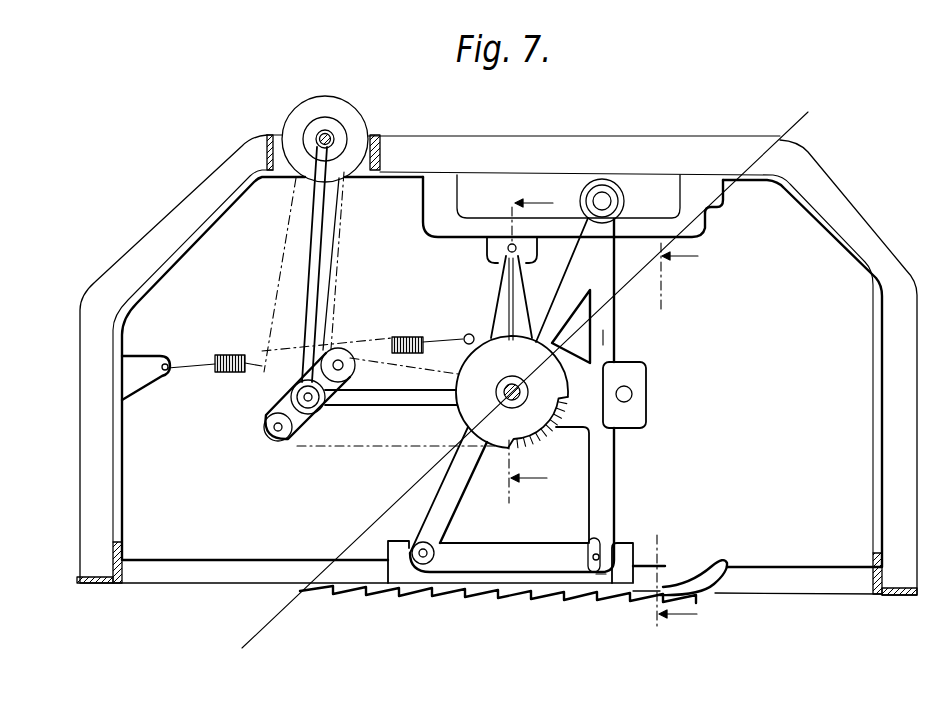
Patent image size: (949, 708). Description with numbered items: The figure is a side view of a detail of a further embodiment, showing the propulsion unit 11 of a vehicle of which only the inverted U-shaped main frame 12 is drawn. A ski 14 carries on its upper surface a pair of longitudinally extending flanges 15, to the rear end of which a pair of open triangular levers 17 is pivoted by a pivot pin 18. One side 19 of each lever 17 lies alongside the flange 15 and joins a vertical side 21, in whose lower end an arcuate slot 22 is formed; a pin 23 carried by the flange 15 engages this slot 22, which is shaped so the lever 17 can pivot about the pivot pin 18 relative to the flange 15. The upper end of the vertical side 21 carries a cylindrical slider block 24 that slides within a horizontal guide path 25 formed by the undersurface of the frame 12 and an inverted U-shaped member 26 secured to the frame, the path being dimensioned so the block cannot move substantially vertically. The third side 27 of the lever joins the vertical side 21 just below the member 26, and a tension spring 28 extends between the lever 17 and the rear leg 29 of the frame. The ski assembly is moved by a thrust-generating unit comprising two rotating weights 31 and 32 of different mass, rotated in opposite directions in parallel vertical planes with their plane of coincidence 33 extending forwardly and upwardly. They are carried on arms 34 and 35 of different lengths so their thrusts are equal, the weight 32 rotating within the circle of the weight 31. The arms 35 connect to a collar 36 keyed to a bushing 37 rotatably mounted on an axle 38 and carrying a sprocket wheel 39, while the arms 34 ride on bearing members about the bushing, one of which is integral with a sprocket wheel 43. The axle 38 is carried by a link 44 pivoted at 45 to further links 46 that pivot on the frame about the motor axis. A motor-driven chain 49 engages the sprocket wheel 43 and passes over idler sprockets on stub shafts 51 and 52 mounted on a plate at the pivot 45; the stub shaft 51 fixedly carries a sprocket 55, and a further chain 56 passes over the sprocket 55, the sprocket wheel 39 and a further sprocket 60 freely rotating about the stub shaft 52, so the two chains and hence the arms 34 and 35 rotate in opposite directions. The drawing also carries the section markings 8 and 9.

The section line 8 is at (688, 438).
The section line 9 is at (523, 348).
The propulsion unit 11 is at (672, 132).
The main frame 12 is at (849, 206).
The ski 14 is at (668, 590).
The longitudinally extending flanges 15 is at (627, 548).
The levers 17 is at (636, 450).
The pivot pin 18 is at (424, 565).
The side of lever 19 is at (490, 564).
The vertical side 21 is at (603, 488).
The arcuate slot 22 is at (600, 586).
The pin 23 is at (588, 549).
The cylindrical slider block 24 is at (605, 180).
The horizontal guide path 25 is at (558, 214).
The inverted U-shaped member 26 is at (453, 226).
The third side 27 is at (458, 477).
The tension spring 28 is at (385, 335).
The rear leg 29 is at (110, 442).
The rotating weight 31 is at (488, 250).
The rotating weight 32 is at (645, 369).
The plane of coincidence 33 is at (714, 206).
The arms 34 is at (500, 298).
The arms 35 is at (580, 388).
The collar 36 is at (352, 121).
The bushing 37 is at (290, 124).
The axle 38 is at (509, 386).
The sprocket wheel 39 is at (470, 404).
The sprocket wheel 43 is at (540, 428).
The link 44 is at (385, 395).
The pivot 45 is at (290, 396).
The further links 46 is at (316, 207).
The chain 49 is at (341, 232).
The stub shaft 51 is at (312, 362).
The stub shaft 52 is at (276, 438).
The sprocket 55 is at (340, 358).
The further chain 56 is at (434, 337).
The further sprocket 60 is at (272, 427).